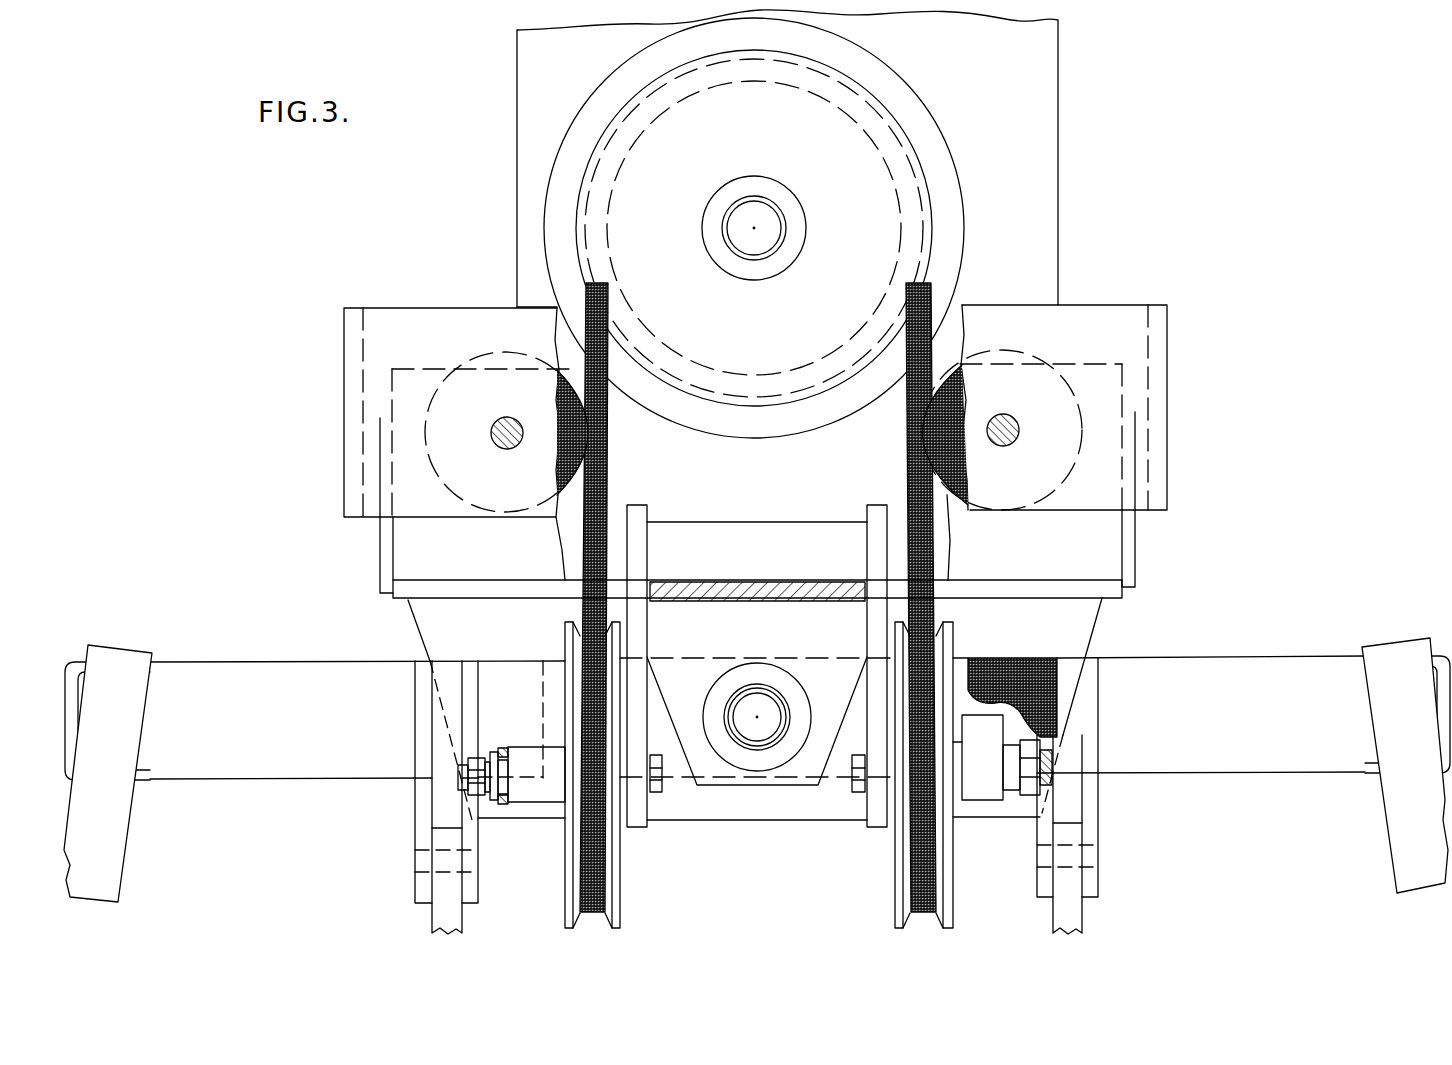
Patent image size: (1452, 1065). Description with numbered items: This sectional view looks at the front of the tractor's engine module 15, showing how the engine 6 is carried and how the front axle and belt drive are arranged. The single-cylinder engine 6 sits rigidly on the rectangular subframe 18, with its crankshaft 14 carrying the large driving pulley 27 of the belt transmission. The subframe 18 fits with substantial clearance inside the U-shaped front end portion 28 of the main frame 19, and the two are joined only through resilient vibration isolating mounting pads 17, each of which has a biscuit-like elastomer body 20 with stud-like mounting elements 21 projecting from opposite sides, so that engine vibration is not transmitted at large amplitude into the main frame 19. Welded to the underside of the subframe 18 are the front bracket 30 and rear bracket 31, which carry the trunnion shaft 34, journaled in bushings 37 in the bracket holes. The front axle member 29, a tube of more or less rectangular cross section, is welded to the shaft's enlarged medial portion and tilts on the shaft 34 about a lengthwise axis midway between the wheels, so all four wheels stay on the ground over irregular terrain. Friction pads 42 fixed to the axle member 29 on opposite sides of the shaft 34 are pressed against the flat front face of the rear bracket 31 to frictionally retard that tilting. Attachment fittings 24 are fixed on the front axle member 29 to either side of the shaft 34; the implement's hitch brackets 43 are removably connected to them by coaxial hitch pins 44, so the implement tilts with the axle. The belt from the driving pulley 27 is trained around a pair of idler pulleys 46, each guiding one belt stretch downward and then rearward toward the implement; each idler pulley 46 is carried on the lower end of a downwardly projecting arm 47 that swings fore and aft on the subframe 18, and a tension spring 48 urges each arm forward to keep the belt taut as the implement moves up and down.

The single-cylinder engine 6 is at (1019, 187).
The crankshaft 14 is at (772, 222).
The engine module 15 is at (1145, 558).
The resilient vibration isolating mounting pads 17 is at (584, 433).
The subframe 18 is at (1010, 578).
The main frame 19 is at (1168, 374).
The biscuit-like elastomer body 20 is at (563, 452).
The stud-like mounting elements 21 is at (503, 420).
The attachment fittings 24 is at (432, 813).
The driving pulley 27 is at (903, 134).
The U-shaped front end portion 28 is at (1160, 440).
The front axle member 29 is at (1210, 668).
The front bracket 30 is at (772, 645).
The rear bracket 31 is at (1008, 636).
The trunnion shaft 34 is at (770, 708).
The bushings 37 is at (733, 705).
The friction pads 42 is at (553, 672).
The hitch brackets 43 is at (464, 912).
The hitch pins 44 is at (430, 880).
The idler pulleys 46 is at (620, 881).
The downwardly projecting arm 47 is at (640, 805).
The tension spring 48 is at (498, 752).